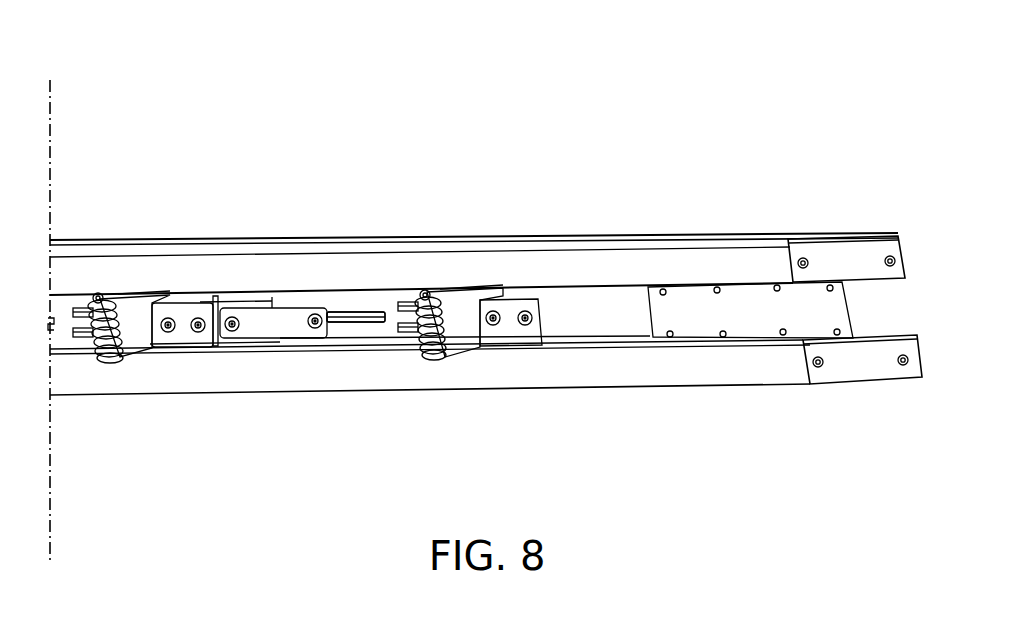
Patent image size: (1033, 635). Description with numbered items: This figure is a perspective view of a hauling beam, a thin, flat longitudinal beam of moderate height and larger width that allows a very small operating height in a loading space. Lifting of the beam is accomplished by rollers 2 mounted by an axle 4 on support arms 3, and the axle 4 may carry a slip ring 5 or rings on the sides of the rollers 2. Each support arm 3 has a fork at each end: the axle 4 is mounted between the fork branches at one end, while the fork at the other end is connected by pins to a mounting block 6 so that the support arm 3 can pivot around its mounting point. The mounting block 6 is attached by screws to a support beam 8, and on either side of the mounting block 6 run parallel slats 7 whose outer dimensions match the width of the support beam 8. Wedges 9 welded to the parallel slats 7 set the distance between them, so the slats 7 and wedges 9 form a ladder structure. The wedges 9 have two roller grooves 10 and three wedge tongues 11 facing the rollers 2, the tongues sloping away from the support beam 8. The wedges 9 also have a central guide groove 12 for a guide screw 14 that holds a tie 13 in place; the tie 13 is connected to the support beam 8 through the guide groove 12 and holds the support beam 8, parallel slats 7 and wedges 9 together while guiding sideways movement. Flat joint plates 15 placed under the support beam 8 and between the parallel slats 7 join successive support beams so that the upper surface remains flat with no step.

The rollers 2 is at (100, 360).
The support arms 3 is at (463, 348).
The axle 4 is at (427, 290).
The slip ring 5 is at (128, 298).
The mounting block 6 is at (186, 347).
The parallel slats 7 is at (634, 386).
The support beam 8 is at (503, 236).
The wedges 9 is at (358, 340).
The roller grooves 10 is at (400, 338).
The wedge tongues 11 is at (56, 306).
The central guide groove 12 is at (357, 309).
The tie 13 is at (286, 330).
The guide screw 14 is at (221, 294).
The joint plates 15 is at (692, 300).